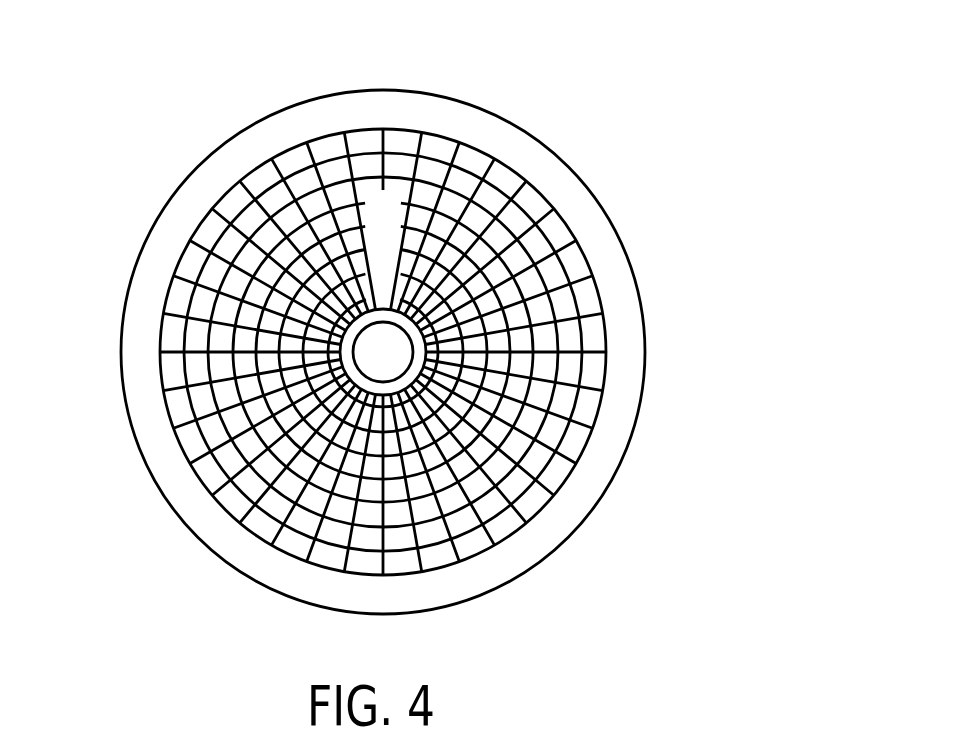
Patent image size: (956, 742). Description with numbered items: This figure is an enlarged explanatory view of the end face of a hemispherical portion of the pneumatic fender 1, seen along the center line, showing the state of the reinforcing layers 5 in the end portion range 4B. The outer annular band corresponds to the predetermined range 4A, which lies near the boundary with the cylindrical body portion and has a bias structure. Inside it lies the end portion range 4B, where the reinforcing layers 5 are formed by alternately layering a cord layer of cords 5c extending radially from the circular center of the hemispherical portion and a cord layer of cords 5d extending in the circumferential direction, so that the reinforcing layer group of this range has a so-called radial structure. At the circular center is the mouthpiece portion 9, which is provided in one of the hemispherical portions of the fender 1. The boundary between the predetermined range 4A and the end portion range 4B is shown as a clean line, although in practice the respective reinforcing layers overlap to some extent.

The pneumatic fender 1 is at (555, 140).
The predetermined range 4A is at (147, 272).
The end portion range 4B is at (557, 238).
The reinforcing layer 5 is at (608, 327).
The cord 5c is at (287, 188).
The cord 5d is at (215, 468).
The mouthpiece portion 9 is at (383, 310).